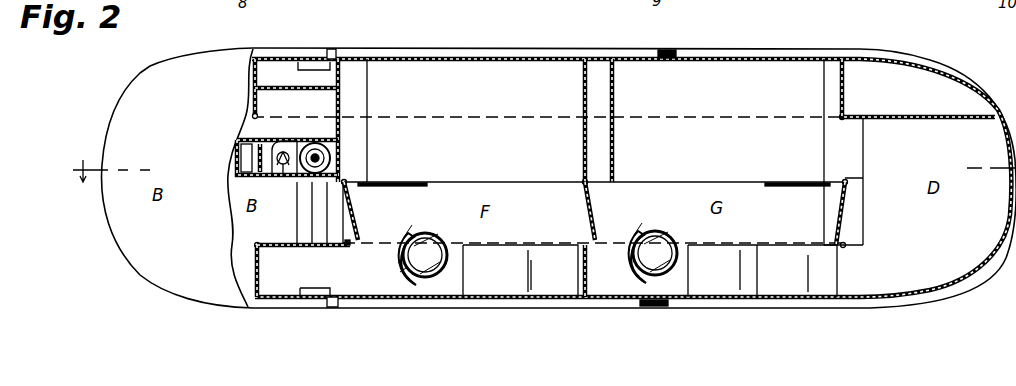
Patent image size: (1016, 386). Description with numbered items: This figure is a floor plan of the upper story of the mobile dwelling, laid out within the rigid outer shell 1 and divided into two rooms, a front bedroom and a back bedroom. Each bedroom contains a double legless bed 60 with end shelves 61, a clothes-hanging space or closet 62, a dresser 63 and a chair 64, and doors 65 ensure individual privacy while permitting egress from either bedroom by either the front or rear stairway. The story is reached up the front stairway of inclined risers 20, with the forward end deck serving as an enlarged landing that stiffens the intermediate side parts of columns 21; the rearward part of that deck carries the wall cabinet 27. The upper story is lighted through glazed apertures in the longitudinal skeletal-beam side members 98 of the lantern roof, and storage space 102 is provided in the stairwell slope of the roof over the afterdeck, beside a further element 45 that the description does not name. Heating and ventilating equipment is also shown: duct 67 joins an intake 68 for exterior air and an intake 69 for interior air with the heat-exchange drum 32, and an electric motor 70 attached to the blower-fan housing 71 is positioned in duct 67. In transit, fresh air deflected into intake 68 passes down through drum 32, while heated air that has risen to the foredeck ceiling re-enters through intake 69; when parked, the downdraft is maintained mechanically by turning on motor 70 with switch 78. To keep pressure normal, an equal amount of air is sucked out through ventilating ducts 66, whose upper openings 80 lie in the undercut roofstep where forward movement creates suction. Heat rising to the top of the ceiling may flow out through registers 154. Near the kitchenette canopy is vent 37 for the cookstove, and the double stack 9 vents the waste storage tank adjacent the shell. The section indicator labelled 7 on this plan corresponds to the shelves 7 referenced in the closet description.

The rigid outer shell 1 is at (178, 300).
The shelves 7 is at (536, 170).
The double stack 9 is at (660, 308).
The risers 20 is at (298, 231).
The columns 21 is at (252, 117).
The wall cabinet 27 is at (296, 89).
The drum 32 is at (356, 120).
The vent 37 is at (668, 43).
The door 45 is at (864, 214).
The double legless bed 60 is at (560, 182).
The end shelves 61 is at (593, 120).
The clothes-hanging space 62 is at (603, 157).
The dresser 63 is at (552, 245).
The chair 64 is at (395, 262).
The doors 65 is at (352, 232).
The ventilating ducts 66 is at (312, 60).
The duct 67 is at (315, 146).
The intake 68 is at (287, 147).
The intake 69 is at (248, 170).
The electric motor 70 is at (272, 180).
The blower-fan housing 71 is at (287, 146).
The switch 78 is at (310, 213).
The openings 80 is at (333, 52).
The longitudinal skeletal-beam side members 98 is at (442, 117).
The storage space 102 is at (918, 88).
The registers 154 is at (415, 188).